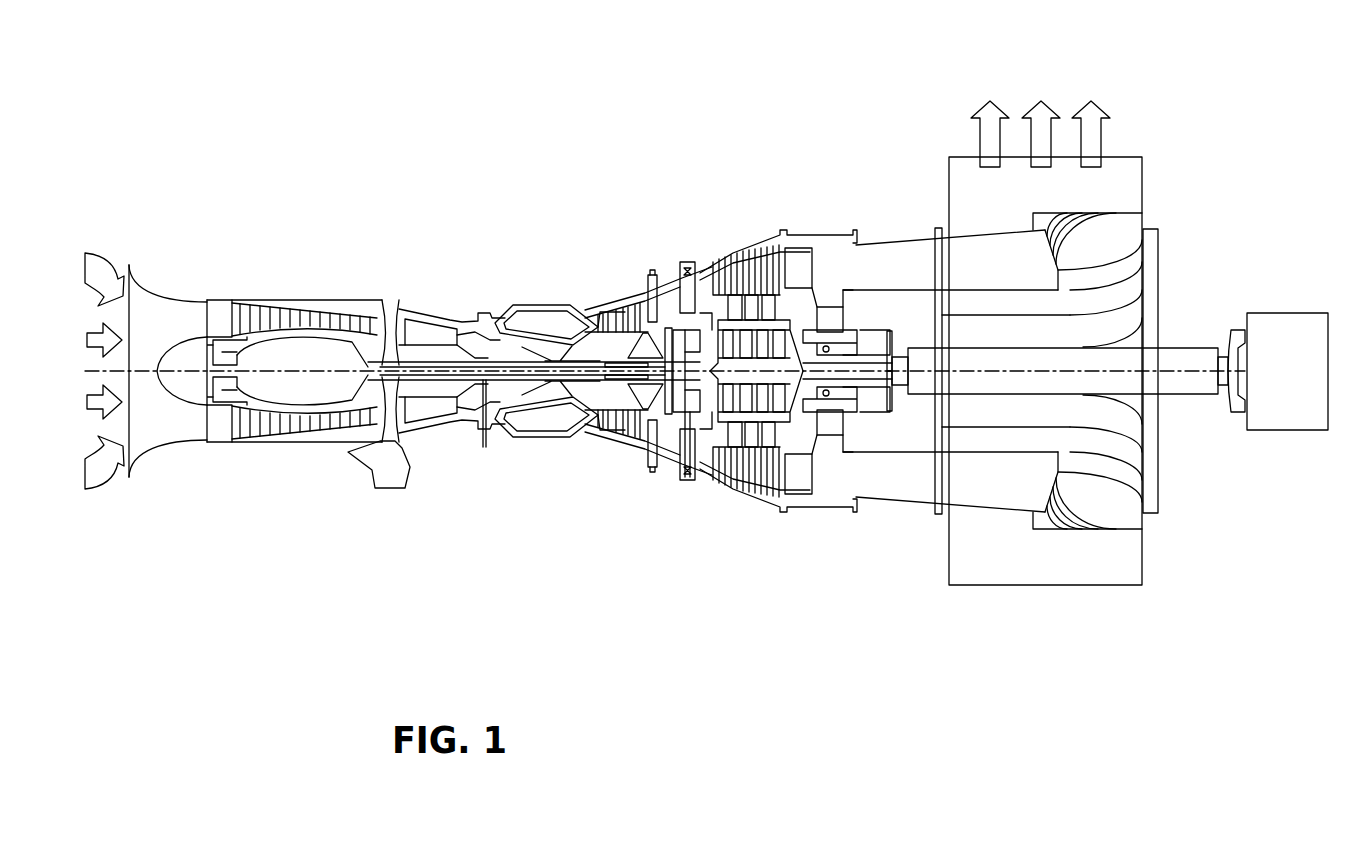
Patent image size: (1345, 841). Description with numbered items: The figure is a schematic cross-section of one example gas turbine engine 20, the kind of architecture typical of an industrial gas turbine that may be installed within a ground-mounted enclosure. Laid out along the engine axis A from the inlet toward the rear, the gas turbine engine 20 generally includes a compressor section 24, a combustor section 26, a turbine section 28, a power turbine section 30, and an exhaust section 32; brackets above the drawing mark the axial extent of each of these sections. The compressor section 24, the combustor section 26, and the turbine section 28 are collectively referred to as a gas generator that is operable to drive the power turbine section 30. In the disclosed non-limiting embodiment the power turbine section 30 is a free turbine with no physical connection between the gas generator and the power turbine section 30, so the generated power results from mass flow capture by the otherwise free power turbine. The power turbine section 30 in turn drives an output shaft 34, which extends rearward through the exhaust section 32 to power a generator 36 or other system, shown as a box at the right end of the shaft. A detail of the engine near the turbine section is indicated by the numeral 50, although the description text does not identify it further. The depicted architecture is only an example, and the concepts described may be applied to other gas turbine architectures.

The gas turbine engine 20 is at (745, 104).
The compressor section 24 is at (482, 212).
The combustor section 26 is at (580, 212).
The turbine section 28 is at (698, 212).
The power turbine section 30 is at (855, 212).
The exhaust section 32 is at (1142, 72).
The output shaft 34 is at (1181, 392).
The generator 36 is at (1275, 384).
The seal assembly 50 is at (684, 478).
The engine axis A is at (283, 378).